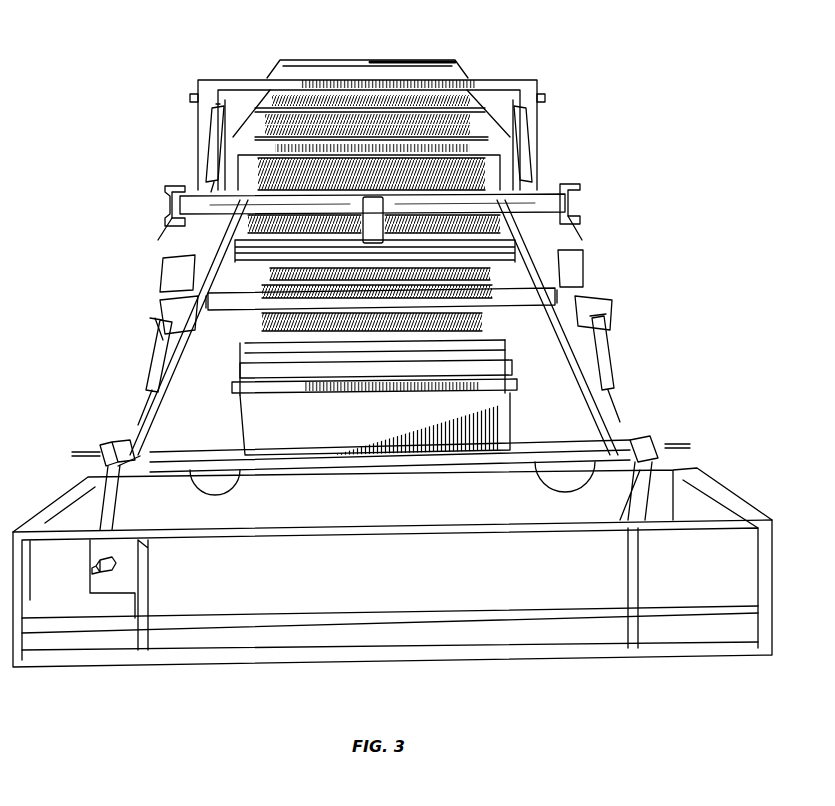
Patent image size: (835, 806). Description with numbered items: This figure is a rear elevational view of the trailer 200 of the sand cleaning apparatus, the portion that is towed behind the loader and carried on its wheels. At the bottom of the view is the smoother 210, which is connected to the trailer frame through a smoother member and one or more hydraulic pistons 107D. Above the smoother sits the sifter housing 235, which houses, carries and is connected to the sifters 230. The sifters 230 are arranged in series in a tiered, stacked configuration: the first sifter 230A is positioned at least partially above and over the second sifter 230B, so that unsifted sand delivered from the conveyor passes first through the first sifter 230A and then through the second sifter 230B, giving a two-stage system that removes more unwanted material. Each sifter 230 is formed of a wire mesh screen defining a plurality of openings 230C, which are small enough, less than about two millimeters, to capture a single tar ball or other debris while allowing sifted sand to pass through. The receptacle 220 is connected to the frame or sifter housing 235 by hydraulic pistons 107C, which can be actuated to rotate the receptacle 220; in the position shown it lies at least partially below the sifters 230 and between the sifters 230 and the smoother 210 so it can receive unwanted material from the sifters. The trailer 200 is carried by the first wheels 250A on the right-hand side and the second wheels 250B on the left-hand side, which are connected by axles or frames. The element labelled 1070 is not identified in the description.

The trailer 200 is at (132, 76).
The smoother 210 is at (80, 598).
The receptacle 220 is at (485, 435).
The sifters 230 is at (480, 172).
The first sifter 230A is at (476, 130).
The second sifter 230B is at (560, 194).
The openings 230C is at (478, 196).
The sifter housing 235 is at (645, 113).
The hydraulic pistons 107C is at (215, 140).
The hydraulic pistons 107D is at (148, 365).
The hydraulic cylinder 1070 is at (596, 330).
The first wheels 250A is at (615, 450).
The second wheels 250B is at (94, 462).